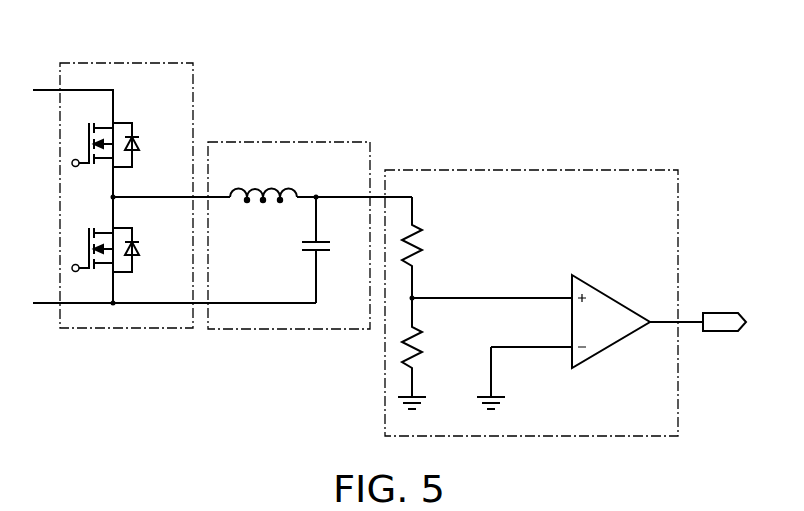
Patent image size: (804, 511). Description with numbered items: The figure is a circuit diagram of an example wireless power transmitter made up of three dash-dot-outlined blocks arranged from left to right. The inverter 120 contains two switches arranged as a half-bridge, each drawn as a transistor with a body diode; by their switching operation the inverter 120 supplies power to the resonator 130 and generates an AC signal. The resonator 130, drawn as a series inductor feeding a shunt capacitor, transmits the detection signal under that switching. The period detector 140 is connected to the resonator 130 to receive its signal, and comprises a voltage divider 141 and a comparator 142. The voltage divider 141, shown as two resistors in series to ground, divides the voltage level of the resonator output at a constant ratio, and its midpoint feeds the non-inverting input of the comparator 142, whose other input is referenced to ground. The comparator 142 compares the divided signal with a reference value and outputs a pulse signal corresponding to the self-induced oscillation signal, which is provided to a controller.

The inverter 120 is at (113, 63).
The resonator 130 is at (315, 142).
The period detector 140 is at (565, 268).
The voltage divider 141 is at (443, 223).
The comparator 142 is at (609, 280).